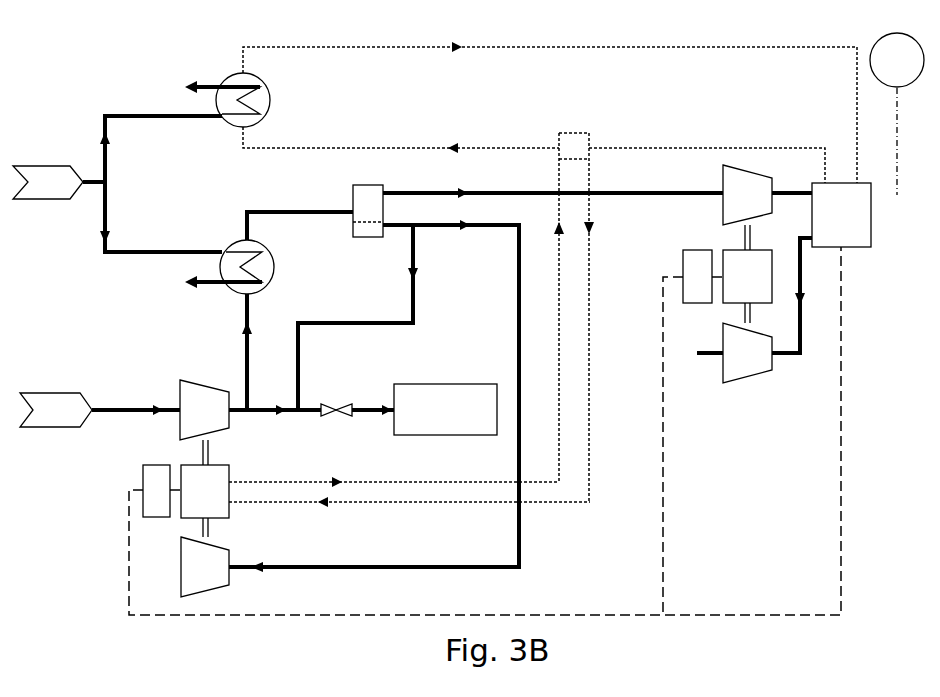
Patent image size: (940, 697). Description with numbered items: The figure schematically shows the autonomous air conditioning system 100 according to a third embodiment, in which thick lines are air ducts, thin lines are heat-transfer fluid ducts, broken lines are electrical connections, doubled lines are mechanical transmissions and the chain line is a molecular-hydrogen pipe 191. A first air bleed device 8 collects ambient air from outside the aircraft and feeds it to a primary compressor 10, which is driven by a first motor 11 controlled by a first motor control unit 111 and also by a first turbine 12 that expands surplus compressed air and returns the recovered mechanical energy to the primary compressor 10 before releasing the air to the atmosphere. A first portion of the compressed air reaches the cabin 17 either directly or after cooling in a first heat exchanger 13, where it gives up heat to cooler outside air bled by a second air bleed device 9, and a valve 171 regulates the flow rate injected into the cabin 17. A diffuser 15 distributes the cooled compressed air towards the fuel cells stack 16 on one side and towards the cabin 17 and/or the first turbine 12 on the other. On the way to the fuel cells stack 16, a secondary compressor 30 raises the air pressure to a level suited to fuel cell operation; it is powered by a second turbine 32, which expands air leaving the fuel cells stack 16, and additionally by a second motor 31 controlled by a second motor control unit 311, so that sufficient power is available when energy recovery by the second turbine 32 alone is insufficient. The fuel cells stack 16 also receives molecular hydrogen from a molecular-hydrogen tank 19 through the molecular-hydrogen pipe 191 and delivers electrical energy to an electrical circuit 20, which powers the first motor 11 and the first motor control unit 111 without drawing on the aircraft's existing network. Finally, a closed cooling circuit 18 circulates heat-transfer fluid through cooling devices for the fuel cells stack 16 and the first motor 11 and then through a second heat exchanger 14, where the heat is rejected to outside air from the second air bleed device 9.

The autonomous air conditioning system 100 is at (95, 66).
The second air bleed device 9 is at (48, 182).
The first air bleed device 8 is at (56, 410).
The primary compressor 10 is at (204, 410).
The first motor 11 is at (205, 491).
The first motor control unit 111 is at (143, 465).
The first turbine 12 is at (205, 567).
The first heat exchanger 13 is at (236, 296).
The second heat exchanger 14 is at (228, 125).
The diffuser 15 is at (369, 211).
The fuel cells stack 16 is at (841, 215).
The cabin 17 is at (445, 409).
The valve 171 is at (322, 402).
The cooling circuit 18 is at (357, 148).
The molecular-hydrogen tank 19 is at (897, 60).
The molecular-hydrogen pipe 191 is at (882, 192).
The electrical circuit 20 is at (842, 400).
The secondary compressor 30 is at (747, 195).
The second motor 31 is at (747, 276).
The second motor control unit 311 is at (683, 250).
The second turbine 32 is at (747, 353).